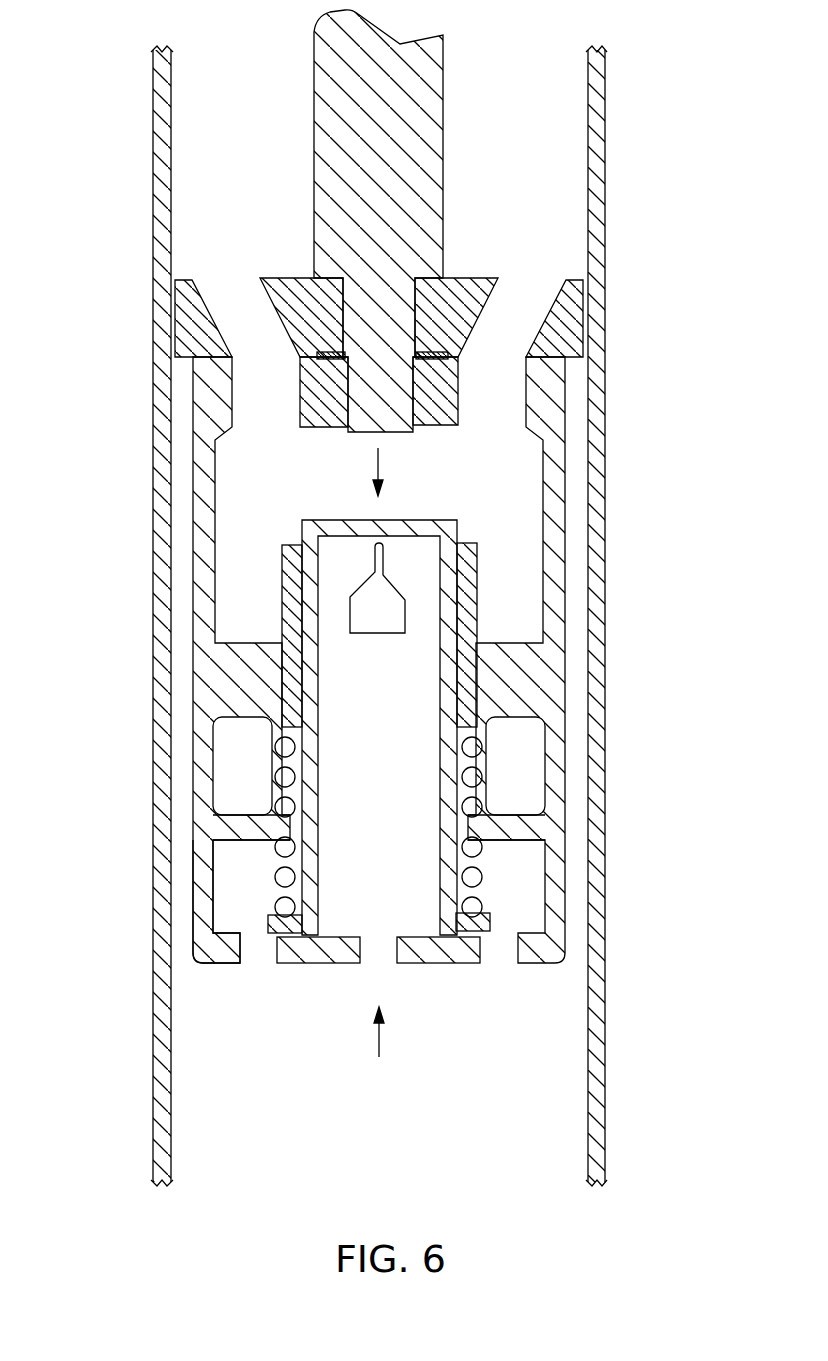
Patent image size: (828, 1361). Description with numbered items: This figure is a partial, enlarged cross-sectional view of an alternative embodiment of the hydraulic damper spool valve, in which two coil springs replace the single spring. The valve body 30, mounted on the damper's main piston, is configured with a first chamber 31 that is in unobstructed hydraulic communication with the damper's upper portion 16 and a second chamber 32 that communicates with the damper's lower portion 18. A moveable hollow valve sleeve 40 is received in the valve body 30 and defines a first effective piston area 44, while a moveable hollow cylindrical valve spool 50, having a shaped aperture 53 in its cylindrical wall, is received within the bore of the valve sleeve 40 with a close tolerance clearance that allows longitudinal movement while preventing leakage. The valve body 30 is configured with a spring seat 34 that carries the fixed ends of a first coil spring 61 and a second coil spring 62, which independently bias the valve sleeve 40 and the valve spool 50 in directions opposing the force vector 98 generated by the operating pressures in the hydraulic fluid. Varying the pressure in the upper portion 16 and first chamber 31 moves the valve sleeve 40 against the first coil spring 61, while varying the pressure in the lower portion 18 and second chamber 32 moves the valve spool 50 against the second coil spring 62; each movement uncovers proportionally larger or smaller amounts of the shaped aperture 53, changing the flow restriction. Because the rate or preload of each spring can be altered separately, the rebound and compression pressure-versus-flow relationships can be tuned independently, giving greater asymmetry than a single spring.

The upper portion 16 is at (547, 161).
The lower portion 18 is at (547, 1108).
The valve body 30 is at (582, 718).
The first chamber 31 is at (517, 500).
The second chamber 32 is at (247, 883).
The spring seat 34 is at (520, 827).
The valve sleeve 40 is at (480, 605).
The first effective piston area 44 is at (292, 545).
The valve spool 50 is at (460, 547).
The shaped aperture 53 is at (370, 610).
The first coil spring 61 is at (478, 764).
The second coil spring 62 is at (480, 870).
The force vector 98 is at (380, 462).